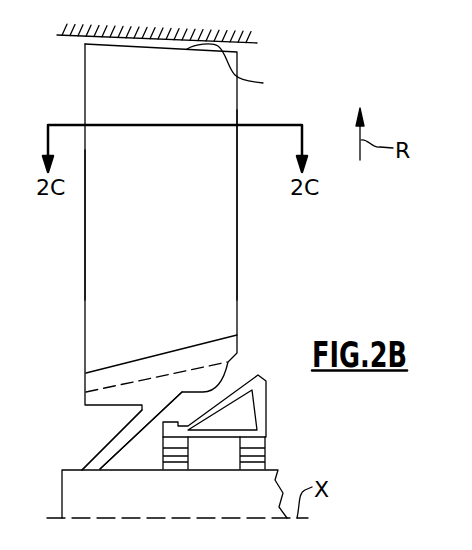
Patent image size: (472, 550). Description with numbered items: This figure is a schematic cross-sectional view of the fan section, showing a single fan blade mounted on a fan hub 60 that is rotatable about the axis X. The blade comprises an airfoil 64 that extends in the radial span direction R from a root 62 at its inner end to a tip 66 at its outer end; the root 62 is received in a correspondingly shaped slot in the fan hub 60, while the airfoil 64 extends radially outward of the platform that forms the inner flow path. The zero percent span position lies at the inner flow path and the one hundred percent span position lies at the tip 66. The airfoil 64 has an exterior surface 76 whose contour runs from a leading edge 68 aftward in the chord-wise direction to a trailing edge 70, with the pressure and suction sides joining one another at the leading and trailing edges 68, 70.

The fan hub 60 is at (107, 454).
The root 62 is at (86, 381).
The airfoil 64 is at (245, 245).
The tip 66 is at (241, 70).
The leading edge 68 is at (85, 197).
The trailing edge 70 is at (238, 165).
The exterior surface 76 is at (198, 216).